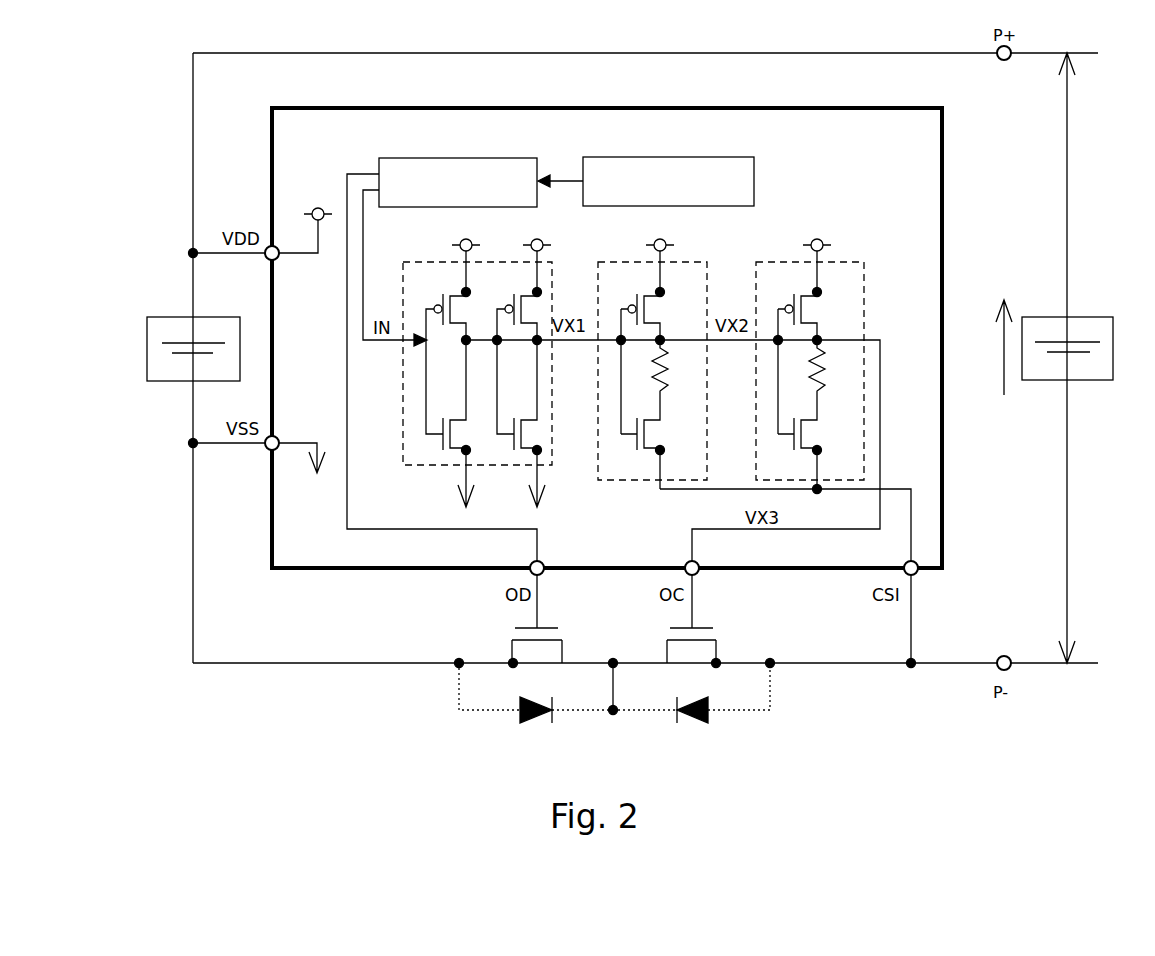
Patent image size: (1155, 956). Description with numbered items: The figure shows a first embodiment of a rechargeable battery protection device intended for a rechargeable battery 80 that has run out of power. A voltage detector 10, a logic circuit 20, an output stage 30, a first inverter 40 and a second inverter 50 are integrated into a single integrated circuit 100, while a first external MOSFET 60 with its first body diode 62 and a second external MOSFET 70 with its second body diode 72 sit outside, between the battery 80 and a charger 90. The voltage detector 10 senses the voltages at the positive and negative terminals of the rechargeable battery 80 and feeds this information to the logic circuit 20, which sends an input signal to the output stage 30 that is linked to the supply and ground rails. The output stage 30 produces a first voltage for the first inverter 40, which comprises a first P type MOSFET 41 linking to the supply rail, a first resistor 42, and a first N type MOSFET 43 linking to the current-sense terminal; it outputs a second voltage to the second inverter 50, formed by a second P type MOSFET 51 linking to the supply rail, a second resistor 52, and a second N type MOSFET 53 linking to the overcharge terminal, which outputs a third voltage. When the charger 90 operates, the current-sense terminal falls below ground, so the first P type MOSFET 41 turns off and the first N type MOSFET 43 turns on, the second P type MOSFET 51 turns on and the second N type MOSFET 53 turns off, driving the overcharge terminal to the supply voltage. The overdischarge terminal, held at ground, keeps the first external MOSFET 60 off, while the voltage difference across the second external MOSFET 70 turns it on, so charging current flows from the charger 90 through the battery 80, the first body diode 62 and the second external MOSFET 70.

The integrated circuit 100 is at (843, 106).
The voltage detector 10 is at (705, 156).
The logic circuit 20 is at (490, 157).
The output stage 30 is at (433, 262).
The first inverter 40 is at (668, 357).
The second inverter 50 is at (828, 357).
The first P type MOSFET 41 is at (656, 299).
The first resistor 42 is at (662, 374).
The first N type MOSFET 43 is at (662, 434).
The second P type MOSFET 51 is at (813, 299).
The second resistor 52 is at (819, 374).
The second N type MOSFET 53 is at (819, 434).
The first external MOSFET 60 is at (550, 627).
The first body diode 62 is at (520, 711).
The second external MOSFET 70 is at (708, 627).
The second body diode 72 is at (712, 709).
The rechargeable battery 80 is at (205, 317).
The charger 90 is at (1100, 317).